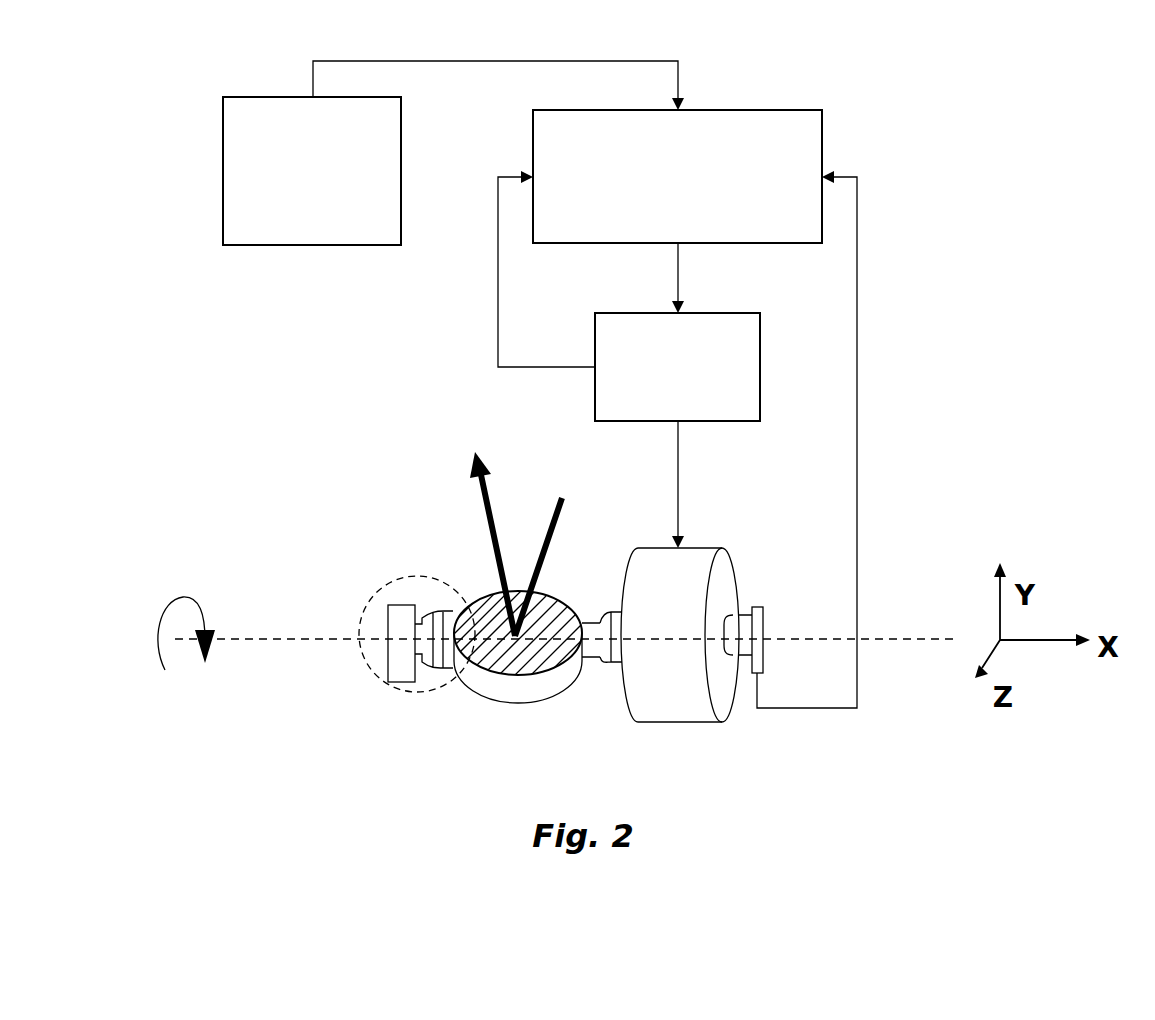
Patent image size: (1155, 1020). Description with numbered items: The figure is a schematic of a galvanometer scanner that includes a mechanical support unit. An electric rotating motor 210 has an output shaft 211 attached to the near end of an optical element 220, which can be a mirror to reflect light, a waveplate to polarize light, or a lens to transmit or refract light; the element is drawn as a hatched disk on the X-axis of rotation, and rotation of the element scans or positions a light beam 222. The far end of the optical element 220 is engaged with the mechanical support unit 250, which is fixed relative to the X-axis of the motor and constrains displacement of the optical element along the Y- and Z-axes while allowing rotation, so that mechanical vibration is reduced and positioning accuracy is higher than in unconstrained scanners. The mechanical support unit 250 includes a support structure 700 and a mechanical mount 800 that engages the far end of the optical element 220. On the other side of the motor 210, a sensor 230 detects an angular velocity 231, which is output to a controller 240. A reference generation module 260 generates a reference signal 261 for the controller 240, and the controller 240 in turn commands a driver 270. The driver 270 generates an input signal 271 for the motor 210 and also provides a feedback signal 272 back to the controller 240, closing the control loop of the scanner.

The electric rotating motor 210 is at (710, 548).
The output shaft 211 is at (585, 655).
The optical element 220 is at (520, 703).
The light beam 222 is at (525, 544).
The sensor 230 is at (755, 607).
The angular velocity 231 is at (782, 637).
The controller 240 is at (735, 107).
The mechanical support unit 250 is at (376, 596).
The reference generation module 260 is at (333, 247).
The reference signal 261 is at (513, 62).
The driver 270 is at (720, 313).
The input signal 271 is at (678, 502).
The feedback signal 272 is at (511, 273).
The support structure 700 is at (398, 605).
The mechanical mount 800 is at (425, 660).